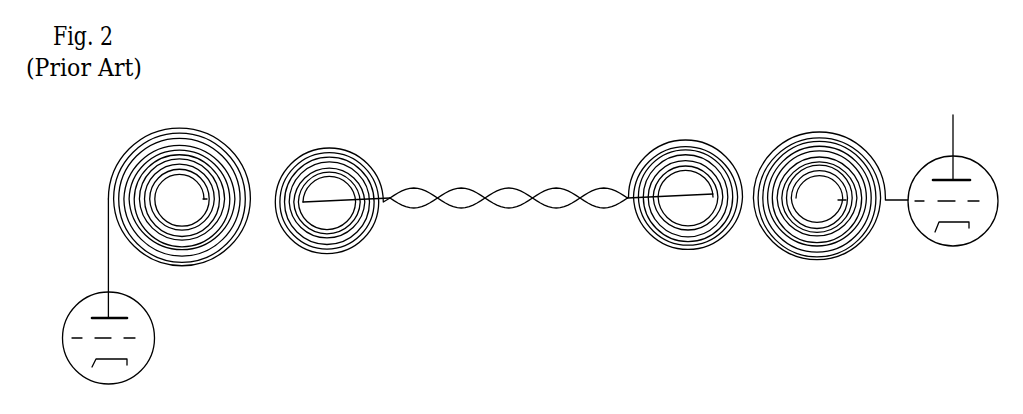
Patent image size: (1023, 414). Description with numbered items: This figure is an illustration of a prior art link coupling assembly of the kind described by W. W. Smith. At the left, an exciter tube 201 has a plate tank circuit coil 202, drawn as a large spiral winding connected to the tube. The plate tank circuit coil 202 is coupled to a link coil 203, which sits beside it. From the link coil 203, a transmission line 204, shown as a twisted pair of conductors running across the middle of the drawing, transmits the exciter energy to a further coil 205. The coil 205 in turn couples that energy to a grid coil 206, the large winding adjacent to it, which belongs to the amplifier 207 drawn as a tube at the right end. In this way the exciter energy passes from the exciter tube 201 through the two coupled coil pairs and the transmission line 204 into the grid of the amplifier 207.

The exciter tube 201 is at (97, 285).
The plate tank circuit coil 202 is at (155, 130).
The link coil 203 is at (328, 133).
The transmission line 204 is at (508, 180).
The coil 205 is at (667, 138).
The grid coil 206 is at (812, 129).
The amplifier 207 is at (968, 154).